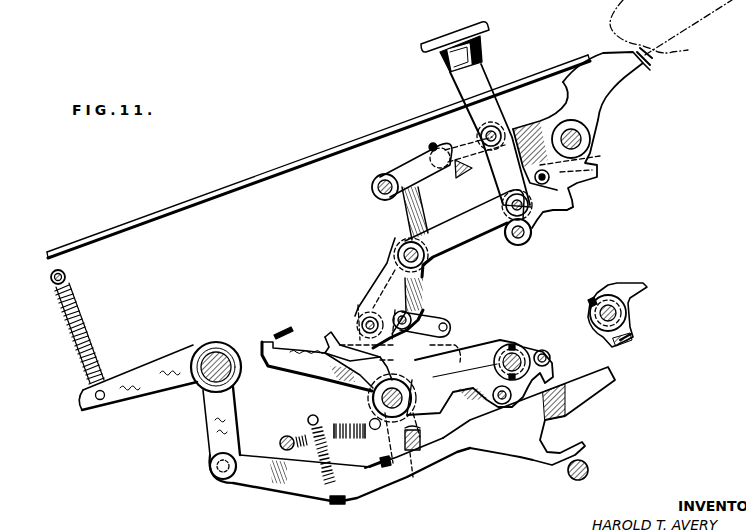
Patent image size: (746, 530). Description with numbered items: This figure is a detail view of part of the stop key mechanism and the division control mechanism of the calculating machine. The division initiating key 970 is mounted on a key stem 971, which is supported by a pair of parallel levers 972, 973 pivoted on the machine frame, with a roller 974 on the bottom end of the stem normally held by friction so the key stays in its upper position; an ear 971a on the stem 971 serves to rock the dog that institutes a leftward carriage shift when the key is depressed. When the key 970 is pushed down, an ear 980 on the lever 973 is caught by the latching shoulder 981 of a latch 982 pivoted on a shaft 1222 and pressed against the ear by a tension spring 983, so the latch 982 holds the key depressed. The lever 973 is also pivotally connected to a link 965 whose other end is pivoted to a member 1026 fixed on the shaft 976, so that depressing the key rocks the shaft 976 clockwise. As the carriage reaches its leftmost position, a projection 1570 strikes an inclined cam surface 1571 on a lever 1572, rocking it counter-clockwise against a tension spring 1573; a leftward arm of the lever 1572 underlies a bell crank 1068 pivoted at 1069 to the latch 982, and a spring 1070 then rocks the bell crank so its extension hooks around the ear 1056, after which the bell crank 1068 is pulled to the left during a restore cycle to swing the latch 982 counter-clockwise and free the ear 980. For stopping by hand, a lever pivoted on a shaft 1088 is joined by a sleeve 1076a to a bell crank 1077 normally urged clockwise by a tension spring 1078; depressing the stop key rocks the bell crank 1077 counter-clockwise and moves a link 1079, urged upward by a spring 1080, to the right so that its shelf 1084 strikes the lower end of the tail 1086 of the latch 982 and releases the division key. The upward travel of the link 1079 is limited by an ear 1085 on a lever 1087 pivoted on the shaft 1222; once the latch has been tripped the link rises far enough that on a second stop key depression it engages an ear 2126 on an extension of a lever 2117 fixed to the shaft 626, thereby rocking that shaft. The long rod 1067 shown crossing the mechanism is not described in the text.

The division initiating key 970 is at (484, 45).
The key stem 971 is at (478, 82).
The ear 971a is at (576, 210).
The lever 972 is at (400, 165).
The lever 973 is at (455, 230).
The roller 974 is at (532, 240).
The link 965 is at (462, 368).
The shaft 976 is at (517, 356).
The ear 980 is at (357, 335).
The latching shoulder 981 is at (327, 338).
The latch 982 is at (336, 383).
The tension spring 983 is at (291, 432).
The member 1026 is at (505, 340).
The ear 1056 is at (275, 337).
The rod 1067 is at (433, 143).
The bell crank 1068 is at (399, 221).
The pivot 1069 is at (423, 312).
The spring 1070 is at (453, 348).
The bell crank 1077 is at (146, 368).
The sleeve 1076a is at (206, 390).
The tension spring 1078 is at (92, 321).
The link 1079 is at (293, 481).
The spring 1080 is at (311, 462).
The shelf 1084 is at (387, 470).
The ear 1085 is at (472, 422).
The tail 1086 is at (411, 464).
The lever 1087 is at (447, 440).
The shaft 1088 is at (218, 348).
The shaft 1222 is at (381, 403).
The projection 1570 is at (655, 62).
The inclined cam surface 1571 is at (671, 29).
The lever 1572 is at (600, 107).
The tension spring 1573 is at (560, 168).
The lever 2117 is at (632, 286).
The shaft 626 is at (617, 313).
The ear 2126 is at (632, 338).